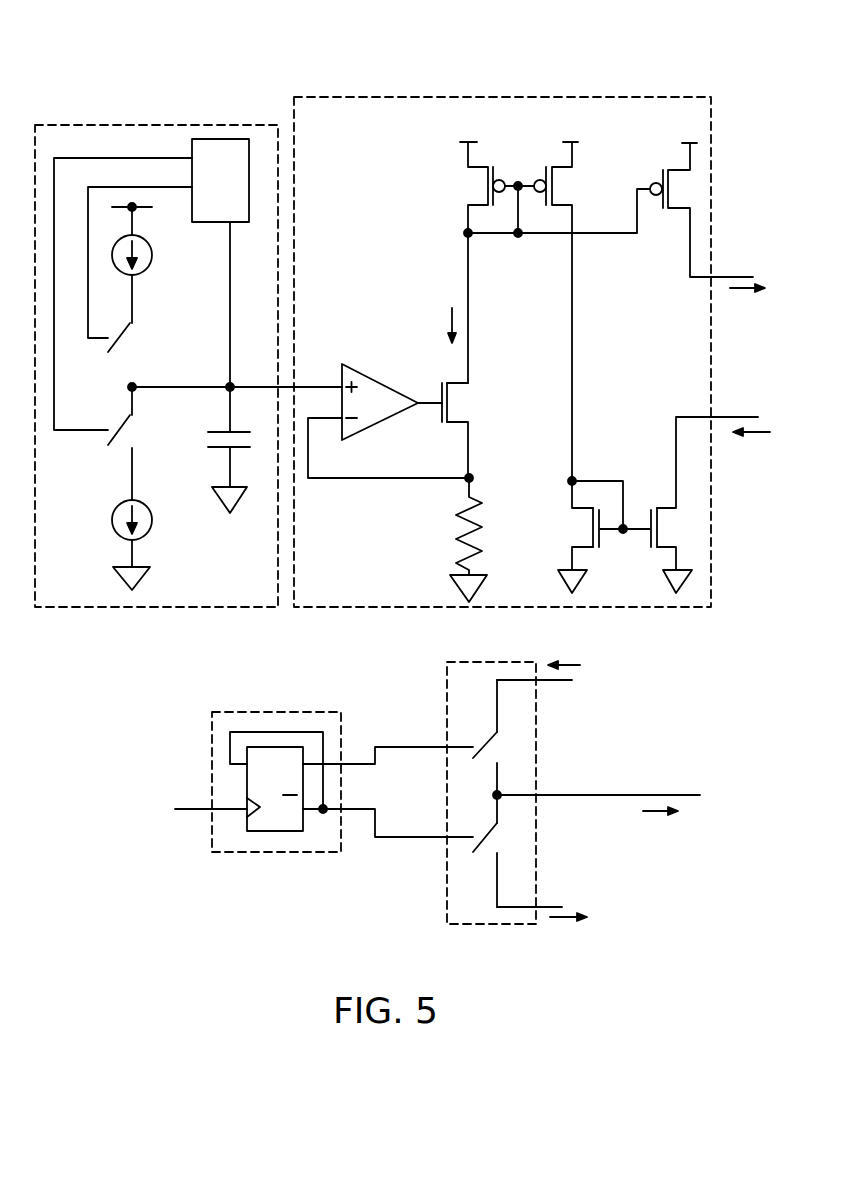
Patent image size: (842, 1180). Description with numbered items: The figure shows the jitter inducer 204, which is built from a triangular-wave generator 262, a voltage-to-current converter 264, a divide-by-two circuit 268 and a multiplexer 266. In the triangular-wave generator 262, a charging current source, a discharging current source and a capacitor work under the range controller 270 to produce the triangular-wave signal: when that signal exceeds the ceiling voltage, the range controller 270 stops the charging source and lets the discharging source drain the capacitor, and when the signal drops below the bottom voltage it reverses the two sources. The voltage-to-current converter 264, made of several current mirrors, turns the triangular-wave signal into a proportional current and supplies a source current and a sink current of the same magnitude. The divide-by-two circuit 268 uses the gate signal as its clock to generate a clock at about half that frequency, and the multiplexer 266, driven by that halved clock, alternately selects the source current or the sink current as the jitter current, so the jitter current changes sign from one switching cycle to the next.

The jitter inducer 204 is at (341, 40).
The triangular-wave generator 262 is at (257, 567).
The voltage-to-current converter 264 is at (348, 144).
The multiplexer 266 is at (447, 693).
The divide-by-2 circuit 268 is at (238, 712).
The range controller 270 is at (233, 196).